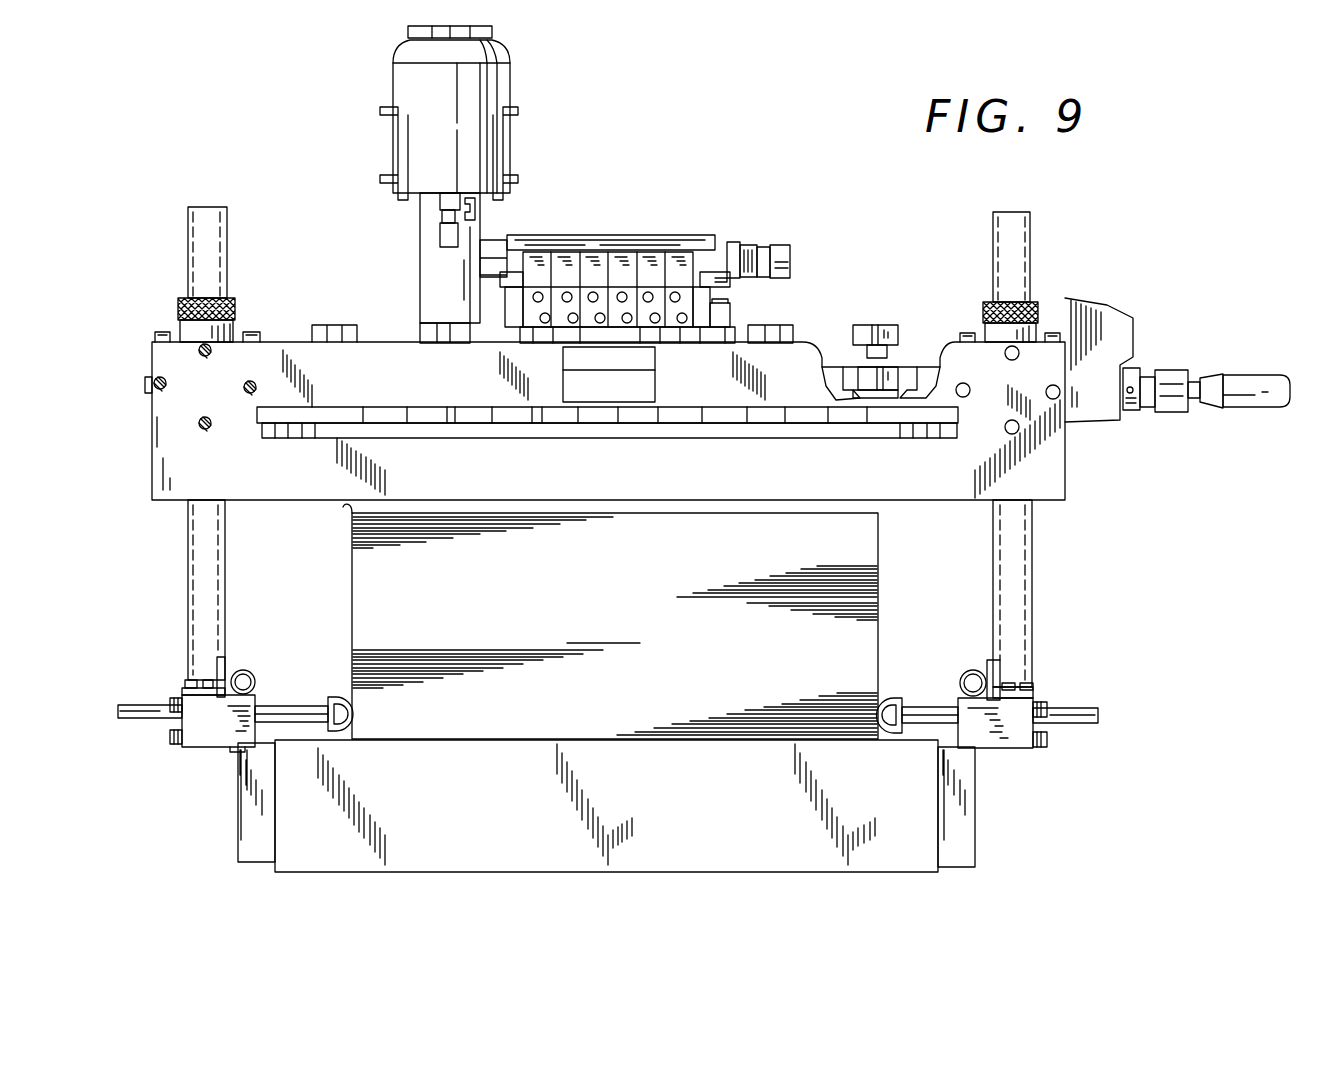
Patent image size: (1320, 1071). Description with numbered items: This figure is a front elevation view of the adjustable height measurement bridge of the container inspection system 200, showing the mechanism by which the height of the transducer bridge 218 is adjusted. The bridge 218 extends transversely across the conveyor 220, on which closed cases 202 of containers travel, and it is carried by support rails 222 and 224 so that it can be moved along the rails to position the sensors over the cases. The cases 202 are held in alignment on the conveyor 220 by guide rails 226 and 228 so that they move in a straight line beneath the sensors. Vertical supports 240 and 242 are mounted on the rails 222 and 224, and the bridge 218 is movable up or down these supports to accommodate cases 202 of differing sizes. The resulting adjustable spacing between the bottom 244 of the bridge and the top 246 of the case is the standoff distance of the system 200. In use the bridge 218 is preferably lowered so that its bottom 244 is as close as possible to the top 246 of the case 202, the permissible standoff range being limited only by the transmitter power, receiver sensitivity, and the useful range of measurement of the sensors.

The container inspection system 200 is at (823, 248).
The case 202 is at (878, 562).
The transducer bridge 218 is at (150, 372).
The conveyor 220 is at (930, 738).
The support rail 222 is at (243, 670).
The support rail 224 is at (972, 670).
The guide rail 226 is at (340, 697).
The guide rail 228 is at (887, 700).
The vertical support 240 is at (208, 240).
The vertical support 242 is at (1013, 248).
The bottom of the bridge 244 is at (240, 498).
The top of the case 246 is at (343, 507).